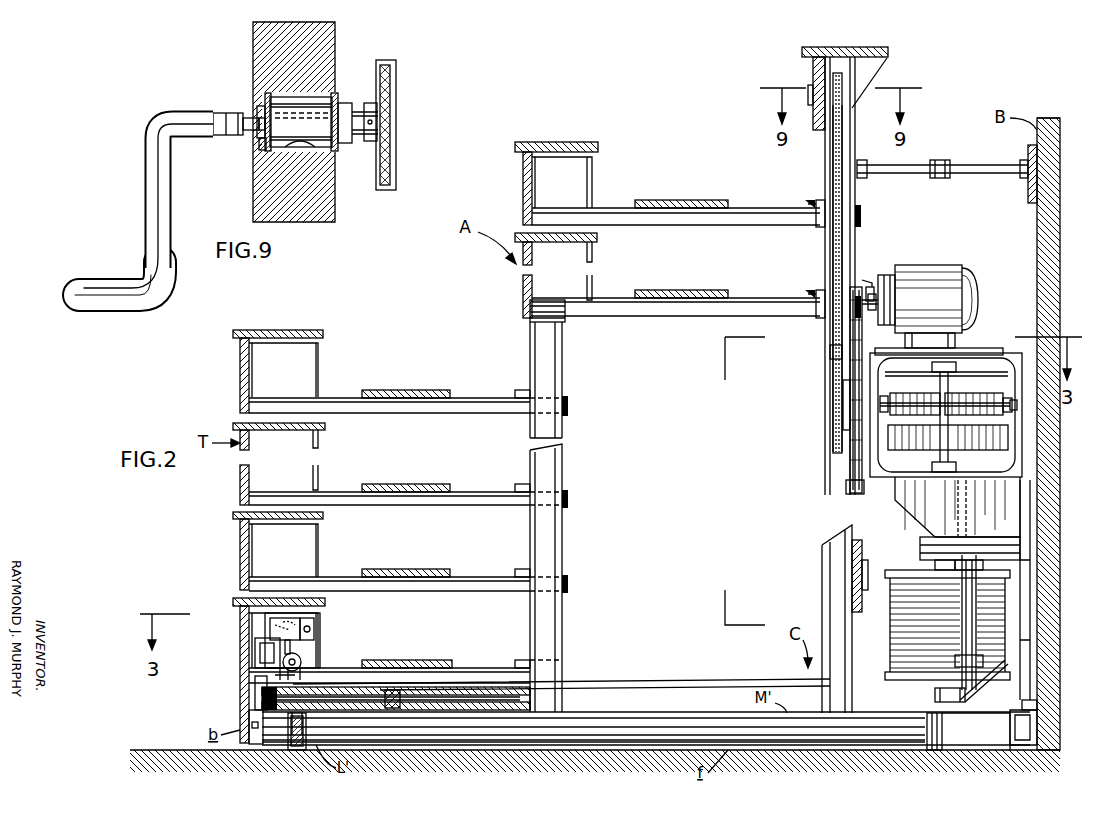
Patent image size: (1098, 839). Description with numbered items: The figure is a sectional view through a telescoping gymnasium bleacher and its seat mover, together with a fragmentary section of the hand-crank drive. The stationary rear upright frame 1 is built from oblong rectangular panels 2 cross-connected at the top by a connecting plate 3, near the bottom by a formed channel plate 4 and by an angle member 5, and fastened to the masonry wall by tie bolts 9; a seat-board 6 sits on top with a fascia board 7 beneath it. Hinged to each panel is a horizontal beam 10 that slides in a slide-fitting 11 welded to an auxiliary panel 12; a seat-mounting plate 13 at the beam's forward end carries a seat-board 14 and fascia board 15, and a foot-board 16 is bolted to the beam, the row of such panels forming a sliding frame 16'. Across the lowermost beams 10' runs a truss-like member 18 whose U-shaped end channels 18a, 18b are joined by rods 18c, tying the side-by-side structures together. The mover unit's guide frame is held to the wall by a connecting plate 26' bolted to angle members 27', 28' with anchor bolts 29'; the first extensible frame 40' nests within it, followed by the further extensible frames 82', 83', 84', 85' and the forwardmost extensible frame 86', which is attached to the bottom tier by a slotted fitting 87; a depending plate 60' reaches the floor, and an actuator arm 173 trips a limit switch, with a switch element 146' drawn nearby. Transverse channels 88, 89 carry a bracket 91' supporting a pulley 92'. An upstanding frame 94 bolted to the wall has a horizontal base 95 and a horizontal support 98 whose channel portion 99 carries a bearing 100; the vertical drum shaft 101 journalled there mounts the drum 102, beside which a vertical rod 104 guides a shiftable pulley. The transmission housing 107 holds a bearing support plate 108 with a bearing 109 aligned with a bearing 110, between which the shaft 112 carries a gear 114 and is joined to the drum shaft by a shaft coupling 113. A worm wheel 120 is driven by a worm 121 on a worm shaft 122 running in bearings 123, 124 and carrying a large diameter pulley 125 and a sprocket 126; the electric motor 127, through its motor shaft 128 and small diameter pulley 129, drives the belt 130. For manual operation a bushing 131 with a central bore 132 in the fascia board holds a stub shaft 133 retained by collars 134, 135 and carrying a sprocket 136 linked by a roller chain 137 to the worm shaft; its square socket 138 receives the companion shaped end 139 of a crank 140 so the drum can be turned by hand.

In FIG. 2, the main or rear upright frame 1 is at (850, 145).
In FIG. 2, the oblong rectangular panels 2 is at (845, 206).
In FIG. 2, the connecting plate 3 is at (870, 80).
In FIG. 2, the formed channel plate 4 is at (860, 564).
In FIG. 2, the angle member 5 is at (812, 204).
In FIG. 2, the seat-board 6 is at (855, 47).
In FIG. 9, the fascia board 7 is at (330, 34).
In FIG. 2, the fascia board 7 is at (813, 68).
In FIG. 2, the tie bolts 9 is at (968, 176).
In FIG. 2, the horizontal element or beam 10 is at (678, 260).
In FIG. 2, the lowermost beams 10' is at (389, 656).
In FIG. 2, the slide-fitting 11 is at (567, 408).
In FIG. 2, the auxiliary panel 12 is at (565, 362).
In FIG. 2, the seat-mounting plate 13 is at (320, 362).
In FIG. 2, the seat-board 14 is at (288, 330).
In FIG. 2, the fascia board 15 is at (240, 398).
In FIG. 2, the foot-board 16 is at (545, 370).
In FIG. 2, the first sliding or telescoping frame 16' is at (563, 643).
In FIG. 2, the truss-like member 18 is at (358, 692).
In FIG. 2, the U-shaped end channel 18a is at (262, 696).
In FIG. 2, the U-shaped end channel 18b is at (548, 676).
In FIG. 2, the rods or struts 18c is at (448, 695).
In FIG. 2, the connecting plate 26' is at (962, 721).
In FIG. 2, the angle member 27' is at (1045, 727).
In FIG. 2, the angle member 28' is at (978, 731).
In FIG. 2, the anchor bolts 29' is at (1051, 704).
In FIG. 2, the first extensible frame 40' is at (593, 712).
In FIG. 2, the depending plate 60' is at (291, 744).
In FIG. 2, the base rail 82' is at (593, 708).
In FIG. 2, the base rail 83' is at (593, 703).
In FIG. 2, the base rail 84' is at (646, 717).
In FIG. 2, the base rail 85' is at (593, 758).
In FIG. 2, the forwardmost extensible frame 86' is at (593, 761).
In FIG. 2, the fitting 87 is at (250, 712).
In FIG. 2, the transverse channel 88 is at (260, 645).
In FIG. 2, the transverse channel 89 is at (262, 640).
In FIG. 2, the bracket 91' is at (254, 631).
In FIG. 2, the pulley 92' is at (317, 652).
In FIG. 2, the upstanding frame 94 is at (1037, 523).
In FIG. 2, the horizontal base 95 is at (1008, 672).
In FIG. 2, the horizontal support 98 is at (983, 565).
In FIG. 2, the channel portion 99 is at (1018, 545).
In FIG. 2, the bearing 100 is at (935, 566).
In FIG. 2, the vertical drum shaft 101 is at (952, 545).
In FIG. 2, the drum 102 is at (890, 634).
In FIG. 2, the vertical rod 104 is at (1005, 560).
In FIG. 2, the transmission housing 107 is at (1000, 354).
In FIG. 2, the bearing support plate 108 is at (905, 372).
In FIG. 2, the bearing 109 is at (956, 372).
In FIG. 2, the bearing 110 is at (956, 469).
In FIG. 2, the shaft 112 is at (950, 385).
In FIG. 2, the shaft coupling 113 is at (928, 518).
In FIG. 2, the gear 114 is at (1008, 440).
In FIG. 2, the worm wheel 120 is at (880, 398).
In FIG. 2, the worm 121 is at (908, 395).
In FIG. 2, the worm shaft 122 is at (1015, 410).
In FIG. 2, the bearing 123 is at (1012, 404).
In FIG. 2, the bearing 124 is at (880, 408).
In FIG. 2, the large diameter pulley 125 is at (848, 480).
In FIG. 2, the sprocket 126 is at (843, 427).
In FIG. 2, the electric motor 127 is at (978, 303).
In FIG. 2, the motor shaft 128 is at (876, 296).
In FIG. 2, the small diameter pulley 129 is at (866, 283).
In FIG. 2, the drive belt 130 is at (852, 458).
In FIG. 9, the bushing 131 is at (336, 96).
In FIG. 9, the central bore 132 is at (261, 150).
In FIG. 9, the stub shaft 133 is at (270, 97).
In FIG. 9, the retaining collar 134 is at (258, 111).
In FIG. 9, the retaining collar 135 is at (344, 108).
In FIG. 9, the sprocket 136 is at (396, 105).
In FIG. 9, the roller chain 137 is at (378, 132).
In FIG. 2, the roller chain 137 is at (830, 352).
In FIG. 9, the square socket 138 is at (260, 130).
In FIG. 9, the companion shaped end 139 is at (216, 112).
In FIG. 9, the crank 140 is at (146, 183).
In FIG. 2, the switch 146' is at (329, 628).
In FIG. 2, the actuator arm 173 is at (278, 676).